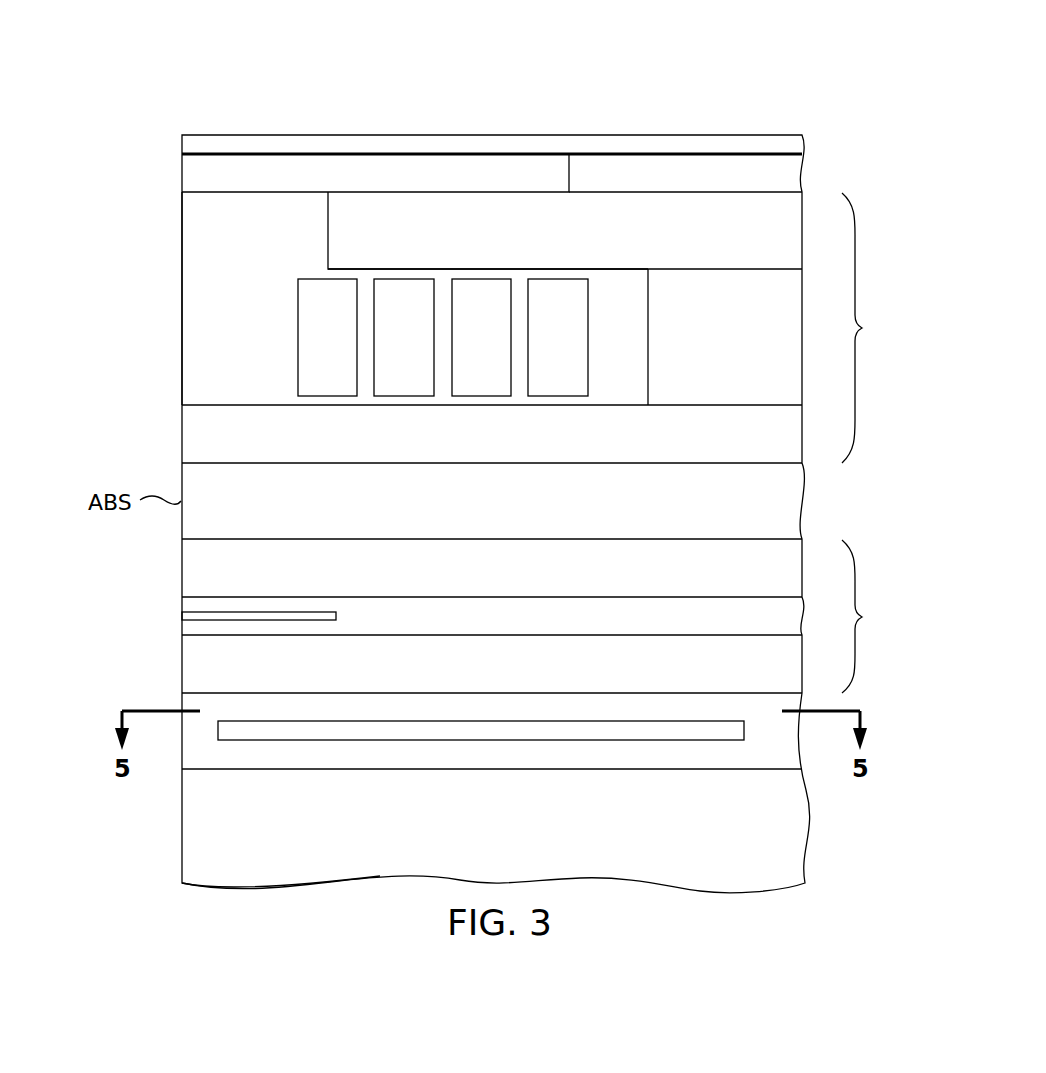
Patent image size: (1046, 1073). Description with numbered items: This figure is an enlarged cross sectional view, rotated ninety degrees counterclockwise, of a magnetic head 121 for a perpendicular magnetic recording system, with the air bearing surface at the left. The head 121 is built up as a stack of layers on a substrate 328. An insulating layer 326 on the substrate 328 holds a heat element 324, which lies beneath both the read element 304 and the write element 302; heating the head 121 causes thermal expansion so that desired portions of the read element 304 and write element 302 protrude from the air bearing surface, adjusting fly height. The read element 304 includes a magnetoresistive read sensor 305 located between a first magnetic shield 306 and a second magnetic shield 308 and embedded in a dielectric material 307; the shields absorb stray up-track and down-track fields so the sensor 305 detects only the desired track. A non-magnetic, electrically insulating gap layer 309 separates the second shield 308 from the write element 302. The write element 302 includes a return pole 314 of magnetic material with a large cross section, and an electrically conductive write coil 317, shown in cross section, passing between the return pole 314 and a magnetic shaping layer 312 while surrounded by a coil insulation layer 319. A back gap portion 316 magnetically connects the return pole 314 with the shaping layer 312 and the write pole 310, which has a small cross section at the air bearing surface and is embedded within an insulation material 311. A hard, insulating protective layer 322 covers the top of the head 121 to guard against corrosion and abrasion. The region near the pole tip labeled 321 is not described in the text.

The magnetic head 121 is at (537, 55).
The write element 302 is at (856, 232).
The read element 304 is at (852, 548).
The magnetoresistive read sensor 305 is at (336, 616).
The first magnetic shield 306 is at (420, 663).
The dielectric material 307 is at (677, 614).
The second magnetic shield 308 is at (420, 571).
The gap layer 309 is at (440, 500).
The write pole 310 is at (277, 174).
The insulation material 311 is at (696, 178).
The magnetic shaping layer 312 is at (432, 233).
The return pole 314 is at (432, 435).
The back gap portion 316 is at (176, 250).
The write coil 317 is at (443, 337).
The coil insulation layer 319 is at (283, 306).
The pole tip region 321 is at (287, 399).
The protective layer 322 is at (383, 145).
The heat element 324 is at (678, 740).
The insulating layer 326 is at (540, 753).
The substrate 328 is at (520, 833).